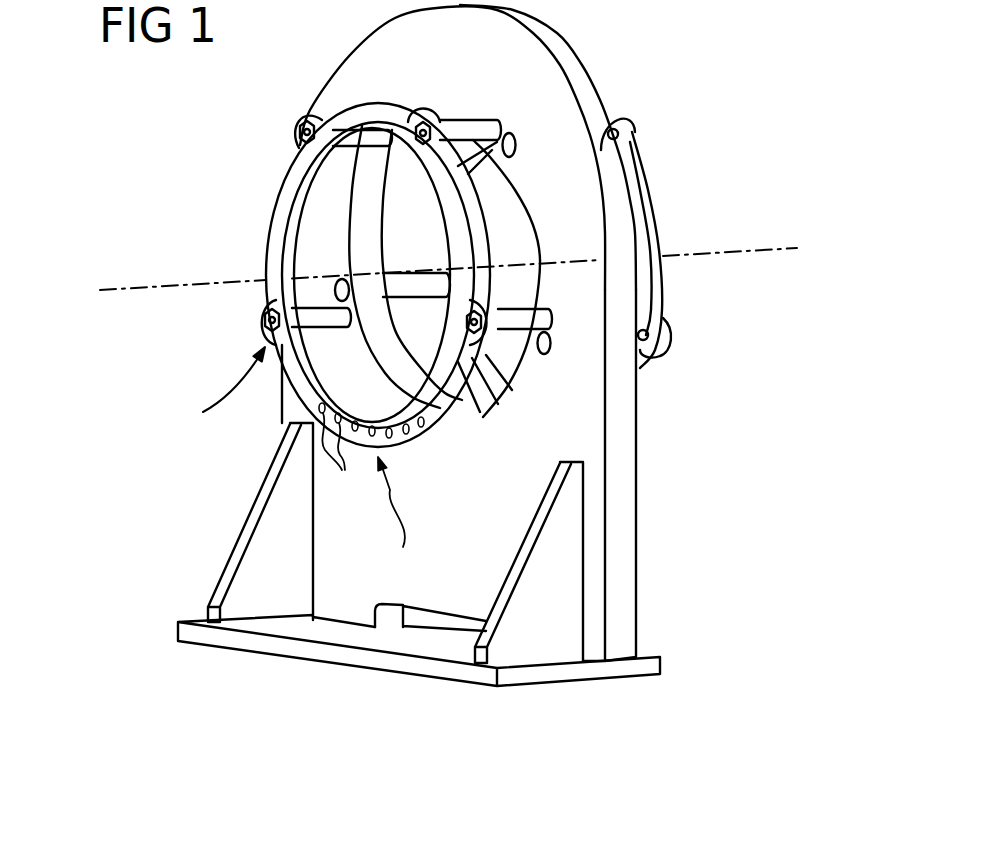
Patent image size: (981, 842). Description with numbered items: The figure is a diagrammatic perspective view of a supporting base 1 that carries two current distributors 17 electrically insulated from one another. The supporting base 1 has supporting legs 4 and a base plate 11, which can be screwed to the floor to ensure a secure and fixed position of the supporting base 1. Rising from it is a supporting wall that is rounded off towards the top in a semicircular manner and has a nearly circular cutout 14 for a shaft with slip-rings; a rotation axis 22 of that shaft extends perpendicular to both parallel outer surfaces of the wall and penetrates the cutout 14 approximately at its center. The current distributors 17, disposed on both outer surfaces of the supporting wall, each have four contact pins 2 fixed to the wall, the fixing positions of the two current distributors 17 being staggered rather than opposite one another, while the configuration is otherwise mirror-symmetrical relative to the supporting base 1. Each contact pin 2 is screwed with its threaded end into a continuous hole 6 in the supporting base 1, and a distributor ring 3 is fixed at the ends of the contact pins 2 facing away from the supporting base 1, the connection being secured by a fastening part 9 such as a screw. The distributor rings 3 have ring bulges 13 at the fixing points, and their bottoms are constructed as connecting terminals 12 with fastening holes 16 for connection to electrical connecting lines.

The supporting base 1 is at (353, 63).
The contact pins 2 is at (472, 120).
The distributor ring 3 is at (276, 224).
The supporting legs 4 is at (560, 560).
The continuous hole 6 is at (510, 134).
The fastening part 9 is at (296, 133).
The base plate 11 is at (187, 632).
The connecting terminals 12 is at (401, 522).
The ring bulges 13 is at (262, 321).
The circular cutout 14 is at (513, 216).
The fastening holes 16 is at (337, 463).
The current distributors 17 is at (209, 388).
The rotation axis 22 is at (167, 280).